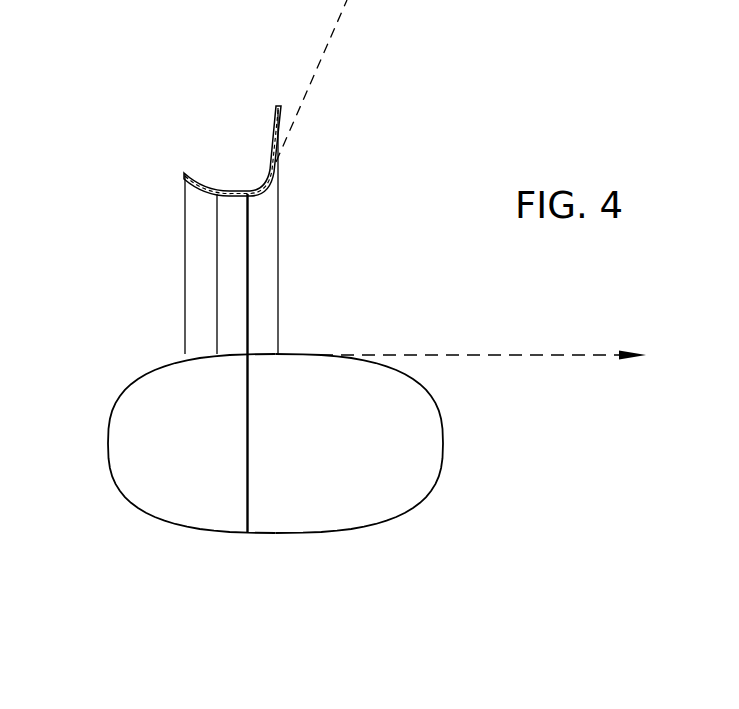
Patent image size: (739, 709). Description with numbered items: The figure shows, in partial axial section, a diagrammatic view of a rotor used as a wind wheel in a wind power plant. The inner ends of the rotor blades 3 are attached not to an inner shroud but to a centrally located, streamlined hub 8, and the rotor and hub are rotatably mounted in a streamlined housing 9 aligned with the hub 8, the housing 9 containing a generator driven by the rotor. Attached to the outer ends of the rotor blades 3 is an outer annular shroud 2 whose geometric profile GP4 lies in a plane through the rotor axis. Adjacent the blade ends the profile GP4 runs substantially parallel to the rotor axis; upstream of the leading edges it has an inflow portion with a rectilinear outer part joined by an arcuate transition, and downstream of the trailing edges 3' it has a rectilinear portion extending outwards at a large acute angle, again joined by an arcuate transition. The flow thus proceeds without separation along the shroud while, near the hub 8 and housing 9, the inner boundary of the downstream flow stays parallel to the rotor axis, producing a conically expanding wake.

The outer annular shroud 2 is at (203, 215).
The rotor blades 3 is at (173, 274).
The trailing edges 3' is at (307, 363).
The geometric profile GP4 is at (228, 190).
The hub 8 is at (152, 427).
The housing 9 is at (390, 432).